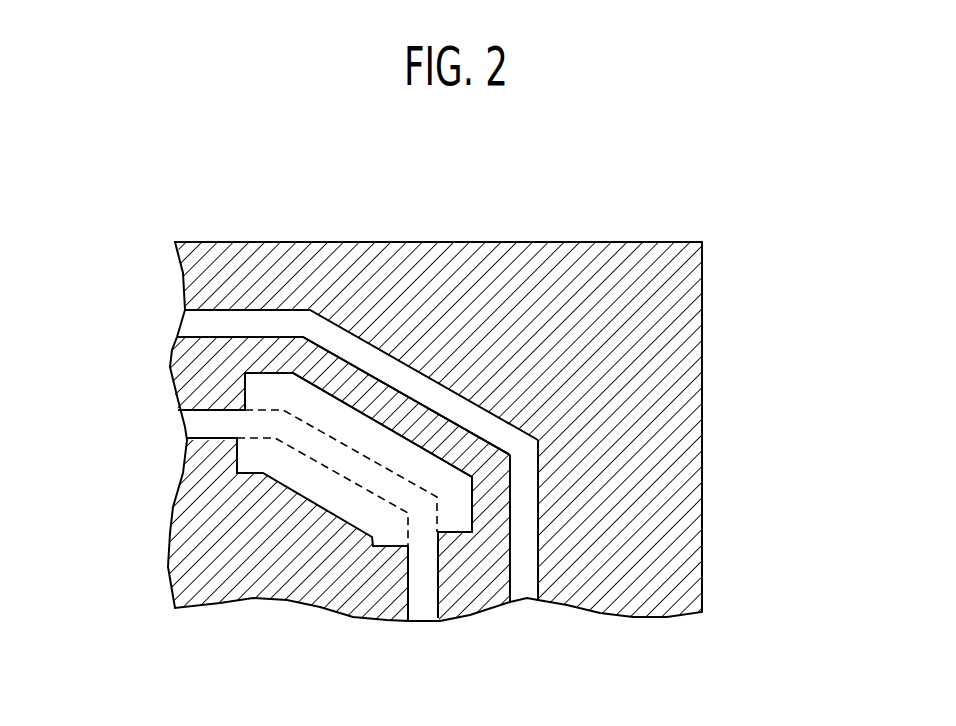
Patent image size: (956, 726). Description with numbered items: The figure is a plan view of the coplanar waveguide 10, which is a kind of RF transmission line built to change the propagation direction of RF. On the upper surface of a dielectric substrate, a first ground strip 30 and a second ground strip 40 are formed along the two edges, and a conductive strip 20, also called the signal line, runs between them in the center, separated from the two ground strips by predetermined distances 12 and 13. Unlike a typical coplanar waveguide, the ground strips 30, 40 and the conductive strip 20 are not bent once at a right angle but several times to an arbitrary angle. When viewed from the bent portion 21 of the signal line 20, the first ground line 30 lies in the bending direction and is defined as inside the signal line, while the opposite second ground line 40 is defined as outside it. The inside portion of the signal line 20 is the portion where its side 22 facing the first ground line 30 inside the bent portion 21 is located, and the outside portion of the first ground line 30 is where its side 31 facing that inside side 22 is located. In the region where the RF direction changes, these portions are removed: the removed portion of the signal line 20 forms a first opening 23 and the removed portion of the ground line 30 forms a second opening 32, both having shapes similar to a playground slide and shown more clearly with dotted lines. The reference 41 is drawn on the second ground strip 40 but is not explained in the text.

The coplanar waveguide 10 is at (163, 147).
The second ground strip 40 is at (185, 272).
The conductive strip 20 is at (188, 370).
The first ground strip 30 is at (178, 530).
The lower surface of upper layer 41 is at (433, 432).
The predetermined distance 12 is at (525, 598).
The bent portion 21 is at (447, 430).
The first opening 23 is at (337, 417).
The side of the signal line 22 is at (397, 430).
The predetermined distance 13 is at (418, 610).
The side of the first ground line 31 is at (312, 500).
The second opening 32 is at (343, 497).